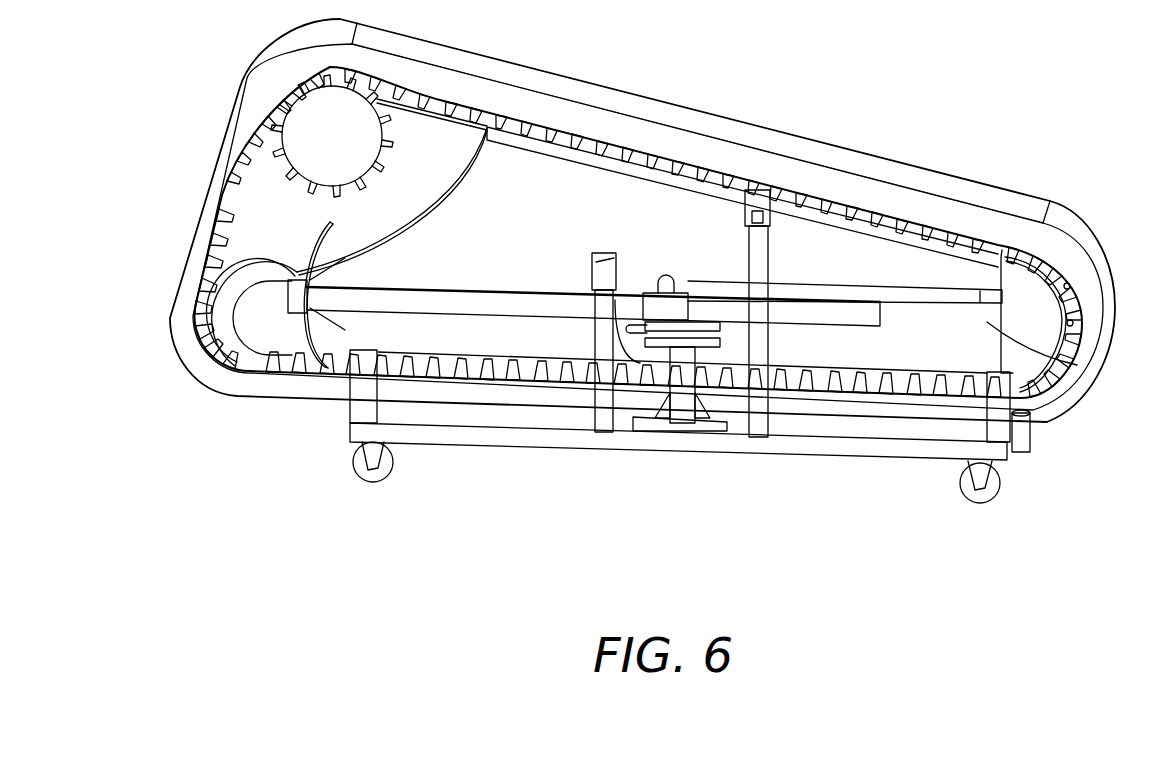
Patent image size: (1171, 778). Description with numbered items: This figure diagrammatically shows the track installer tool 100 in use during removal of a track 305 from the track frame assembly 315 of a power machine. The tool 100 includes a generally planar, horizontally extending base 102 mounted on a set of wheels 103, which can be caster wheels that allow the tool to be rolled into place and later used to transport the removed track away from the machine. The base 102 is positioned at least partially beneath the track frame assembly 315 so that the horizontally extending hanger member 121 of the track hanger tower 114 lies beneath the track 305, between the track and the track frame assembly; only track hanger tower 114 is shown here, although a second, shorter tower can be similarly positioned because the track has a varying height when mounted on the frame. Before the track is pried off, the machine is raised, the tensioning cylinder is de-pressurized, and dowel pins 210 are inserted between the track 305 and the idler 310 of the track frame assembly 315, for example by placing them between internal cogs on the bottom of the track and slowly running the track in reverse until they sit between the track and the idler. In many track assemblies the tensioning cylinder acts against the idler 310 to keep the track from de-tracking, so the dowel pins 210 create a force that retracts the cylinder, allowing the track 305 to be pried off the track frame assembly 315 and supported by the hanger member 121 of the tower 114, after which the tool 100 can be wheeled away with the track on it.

The track installer tool 100 is at (565, 467).
The base 102 is at (735, 445).
The wheels 103 is at (382, 473).
The track hanger tower 114 is at (765, 153).
The horizontally extending hanger member 121 is at (762, 207).
The dowel pins 210 is at (1079, 290).
The track 305 is at (864, 167).
The idler 310 is at (1007, 267).
The track frame assembly 315 is at (1078, 366).